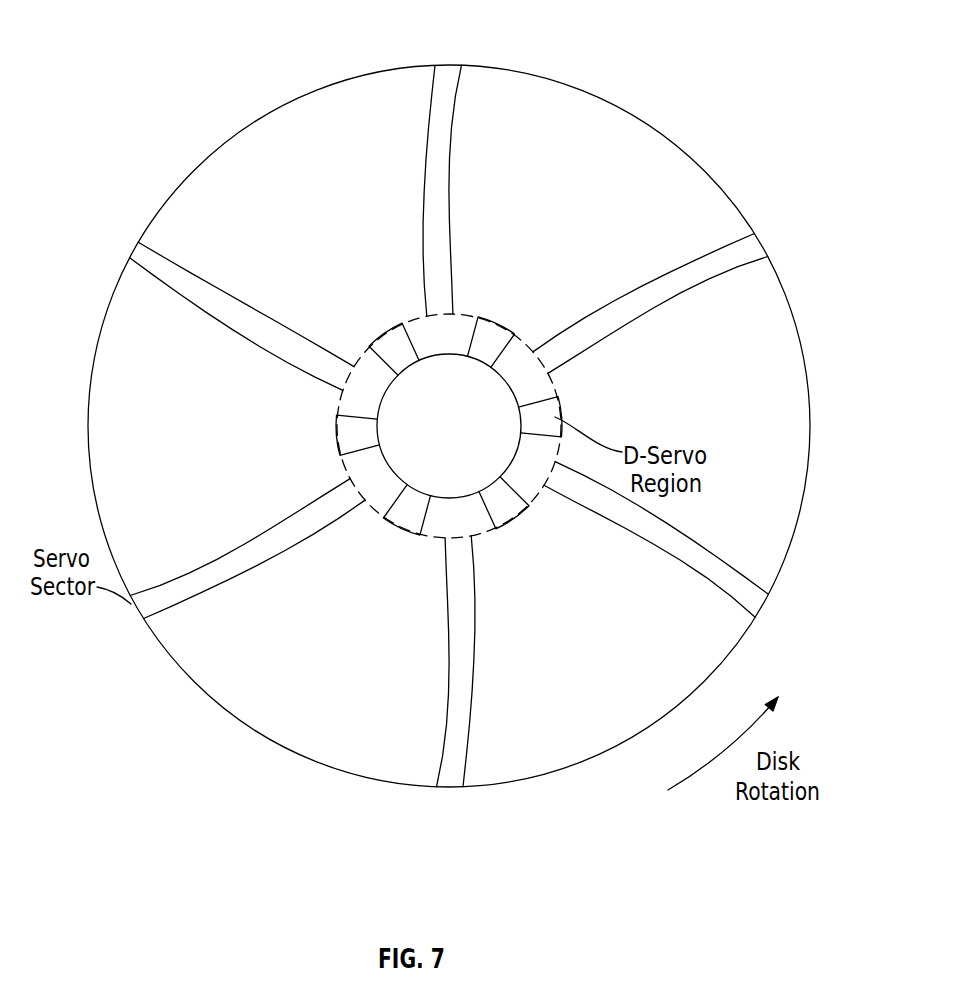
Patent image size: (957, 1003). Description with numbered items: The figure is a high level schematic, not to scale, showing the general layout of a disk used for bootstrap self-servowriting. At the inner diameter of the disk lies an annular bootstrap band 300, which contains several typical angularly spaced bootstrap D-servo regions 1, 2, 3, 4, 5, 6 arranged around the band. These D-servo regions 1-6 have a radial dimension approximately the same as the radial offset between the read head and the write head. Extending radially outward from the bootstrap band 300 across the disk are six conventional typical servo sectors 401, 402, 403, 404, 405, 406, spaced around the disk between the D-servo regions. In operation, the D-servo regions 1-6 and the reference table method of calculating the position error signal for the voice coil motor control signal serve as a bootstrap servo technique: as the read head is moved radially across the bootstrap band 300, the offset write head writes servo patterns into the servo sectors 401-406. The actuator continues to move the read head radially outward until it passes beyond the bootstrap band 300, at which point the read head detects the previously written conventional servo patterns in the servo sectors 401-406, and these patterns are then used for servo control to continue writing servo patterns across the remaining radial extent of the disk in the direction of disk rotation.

The bootstrap band 300 is at (457, 325).
The servo sector 401 is at (449, 72).
The servo sector 402 is at (752, 247).
The servo sector 403 is at (755, 604).
The servo sector 404 is at (452, 773).
The servo sector 405 is at (146, 613).
The servo sector 406 is at (139, 253).
The D-servo region 1 is at (500, 336).
The D-servo region 2 is at (553, 405).
The D-servo region 3 is at (508, 510).
The D-servo region 4 is at (400, 520).
The D-servo region 5 is at (345, 430).
The D-servo region 6 is at (392, 340).